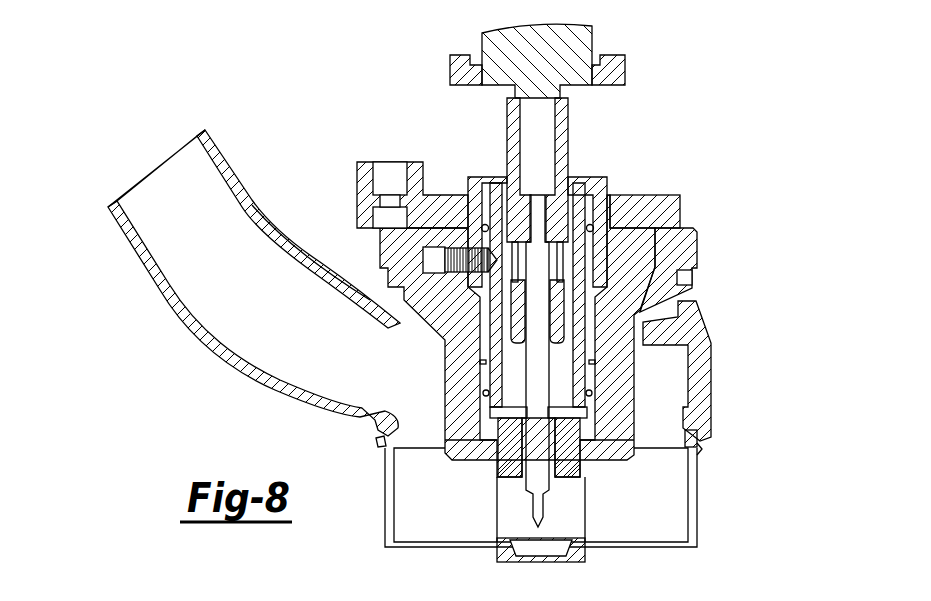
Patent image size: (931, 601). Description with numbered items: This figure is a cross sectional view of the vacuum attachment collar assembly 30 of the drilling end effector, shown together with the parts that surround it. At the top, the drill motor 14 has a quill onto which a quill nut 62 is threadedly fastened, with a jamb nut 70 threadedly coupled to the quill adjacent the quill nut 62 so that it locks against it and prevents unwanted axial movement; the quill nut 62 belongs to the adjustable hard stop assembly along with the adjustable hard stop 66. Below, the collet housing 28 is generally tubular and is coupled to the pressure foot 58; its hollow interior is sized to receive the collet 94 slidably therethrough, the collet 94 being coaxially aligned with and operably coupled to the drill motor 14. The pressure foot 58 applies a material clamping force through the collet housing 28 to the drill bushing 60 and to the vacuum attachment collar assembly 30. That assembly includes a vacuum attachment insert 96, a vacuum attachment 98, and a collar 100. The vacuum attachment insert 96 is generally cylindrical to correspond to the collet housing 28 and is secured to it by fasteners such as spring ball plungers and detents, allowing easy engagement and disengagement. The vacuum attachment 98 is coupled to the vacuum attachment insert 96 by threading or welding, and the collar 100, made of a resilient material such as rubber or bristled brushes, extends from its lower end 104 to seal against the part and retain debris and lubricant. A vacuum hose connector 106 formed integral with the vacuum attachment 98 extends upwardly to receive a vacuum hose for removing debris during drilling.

The drill motor 14 is at (592, 36).
The collet housing 28 is at (636, 385).
The vacuum attachment collar assembly 30 is at (797, 278).
The pressure foot 58 is at (362, 162).
The drill bushing 60 is at (508, 563).
The quill nut 62 is at (625, 79).
The adjustable hard stop 66 is at (580, 178).
The jamb nut 70 is at (450, 60).
The collet 94 is at (508, 143).
The vacuum attachment insert 96 is at (697, 243).
The vacuum attachment 98 is at (197, 315).
The collar 100 is at (697, 515).
The lower end 104 is at (702, 447).
The vacuum hose connector 106 is at (118, 222).